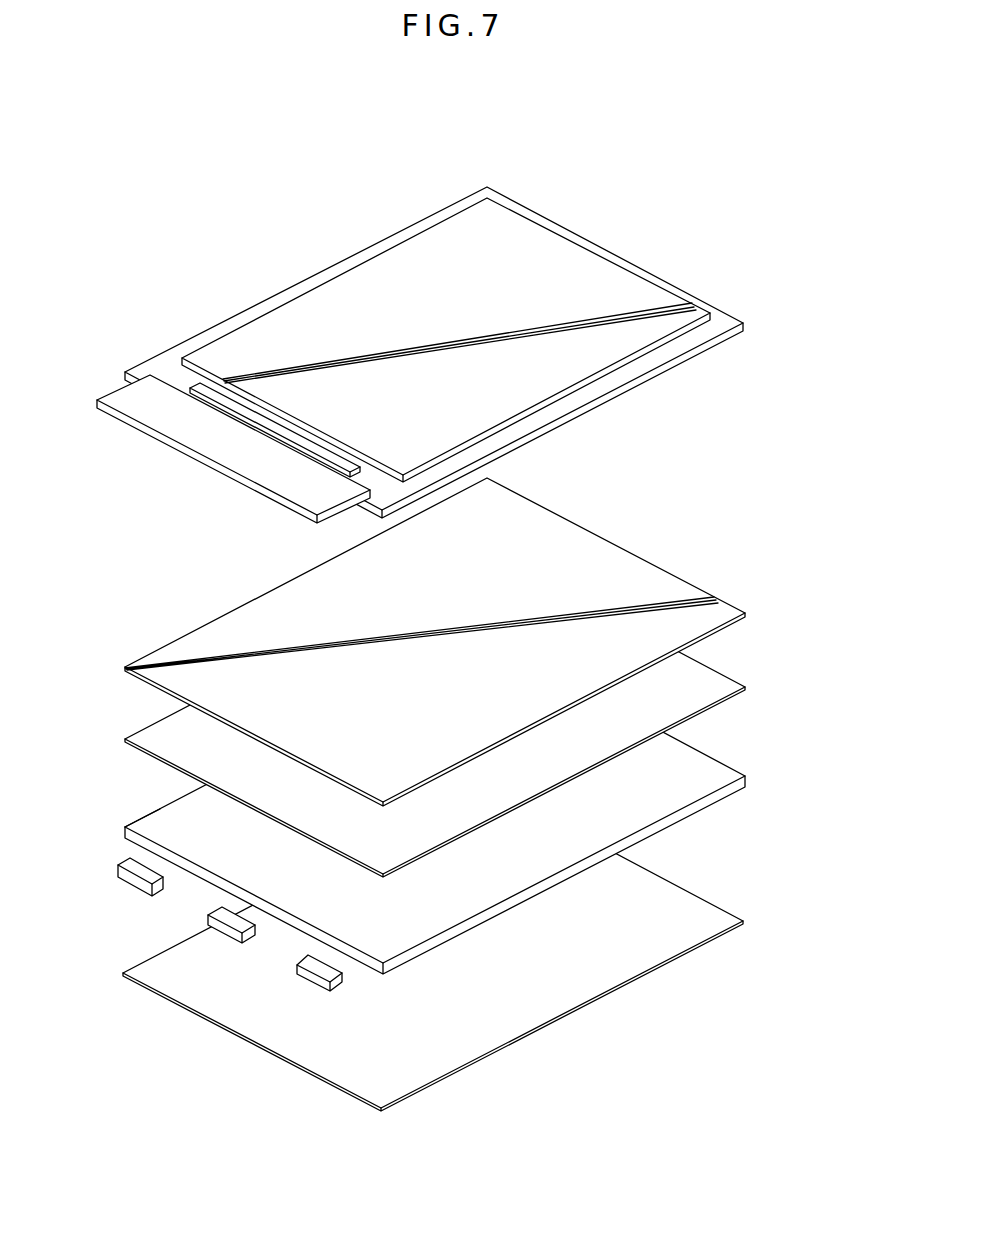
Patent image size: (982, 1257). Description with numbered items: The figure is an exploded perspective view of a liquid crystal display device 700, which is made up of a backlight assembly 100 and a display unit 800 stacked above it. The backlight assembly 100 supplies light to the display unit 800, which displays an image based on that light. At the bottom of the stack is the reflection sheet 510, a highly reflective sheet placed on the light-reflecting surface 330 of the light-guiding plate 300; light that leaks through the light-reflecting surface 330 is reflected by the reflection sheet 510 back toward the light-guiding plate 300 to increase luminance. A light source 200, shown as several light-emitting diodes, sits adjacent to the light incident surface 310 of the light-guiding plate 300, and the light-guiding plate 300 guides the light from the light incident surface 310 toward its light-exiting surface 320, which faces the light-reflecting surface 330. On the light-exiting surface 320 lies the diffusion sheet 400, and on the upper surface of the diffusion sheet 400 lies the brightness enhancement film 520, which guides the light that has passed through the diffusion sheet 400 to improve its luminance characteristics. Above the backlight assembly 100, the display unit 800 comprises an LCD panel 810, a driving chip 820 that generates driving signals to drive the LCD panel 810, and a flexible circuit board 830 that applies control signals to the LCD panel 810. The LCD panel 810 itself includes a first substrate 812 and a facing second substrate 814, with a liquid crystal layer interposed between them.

The LCD device 700 is at (349, 151).
The display unit 800 is at (312, 262).
The LCD panel 810 is at (721, 363).
The first substrate 812 is at (577, 403).
The second substrate 814 is at (618, 341).
The driving chip 820 is at (231, 397).
The flexible circuit board 830 is at (140, 413).
The backlight assembly 100 is at (793, 521).
The brightness enhancement film 520 is at (706, 561).
The diffusion sheet 400 is at (728, 660).
The light-guiding plate 300 is at (729, 751).
The light incident surface 310 is at (130, 832).
The light-exiting surface 320 is at (673, 797).
The light-reflecting surface 330 is at (650, 838).
The light source 200 is at (143, 870).
The reflection sheet 510 is at (713, 971).